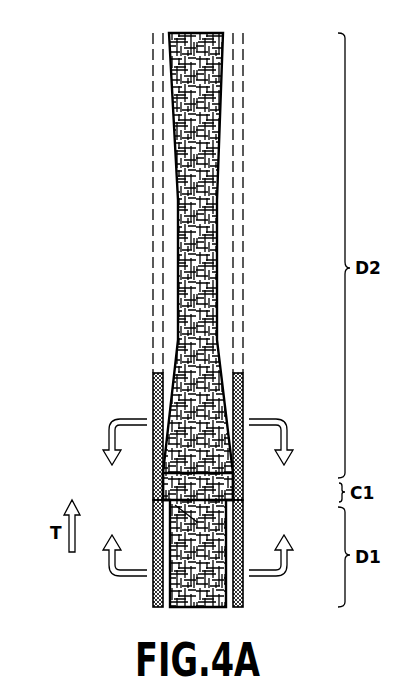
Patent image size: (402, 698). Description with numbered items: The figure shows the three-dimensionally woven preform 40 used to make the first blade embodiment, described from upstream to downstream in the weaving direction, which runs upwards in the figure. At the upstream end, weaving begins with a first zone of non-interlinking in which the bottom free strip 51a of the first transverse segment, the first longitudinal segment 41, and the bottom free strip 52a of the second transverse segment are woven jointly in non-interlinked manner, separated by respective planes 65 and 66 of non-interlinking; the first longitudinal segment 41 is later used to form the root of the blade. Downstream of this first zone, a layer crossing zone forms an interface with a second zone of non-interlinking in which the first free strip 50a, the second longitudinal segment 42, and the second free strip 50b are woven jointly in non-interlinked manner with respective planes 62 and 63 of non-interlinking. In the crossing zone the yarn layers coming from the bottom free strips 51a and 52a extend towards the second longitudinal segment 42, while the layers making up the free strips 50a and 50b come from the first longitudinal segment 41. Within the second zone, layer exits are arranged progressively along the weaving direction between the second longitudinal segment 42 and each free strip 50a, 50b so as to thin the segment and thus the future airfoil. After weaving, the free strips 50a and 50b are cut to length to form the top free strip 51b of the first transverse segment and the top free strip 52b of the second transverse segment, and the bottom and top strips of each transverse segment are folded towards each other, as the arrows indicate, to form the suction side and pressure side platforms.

The three-dimensionally woven preform 40 is at (116, 167).
The first longitudinal segment 41 is at (163, 493).
The second longitudinal segment 42 is at (178, 240).
The first free strip 50a is at (241, 165).
The second free strip 50b is at (155, 93).
The bottom free strip of the first transverse segment 51a is at (243, 600).
The top free strip of the first transverse segment 51b is at (243, 398).
The bottom free strip of the second transverse segment 52a is at (153, 600).
The top free strip of the second transverse segment 52b is at (153, 402).
The plane of non-interlinking 62 is at (232, 272).
The plane of non-interlinking 63 is at (163, 272).
The plane of non-interlinking 65 is at (229, 523).
The plane of non-interlinking 66 is at (161, 530).